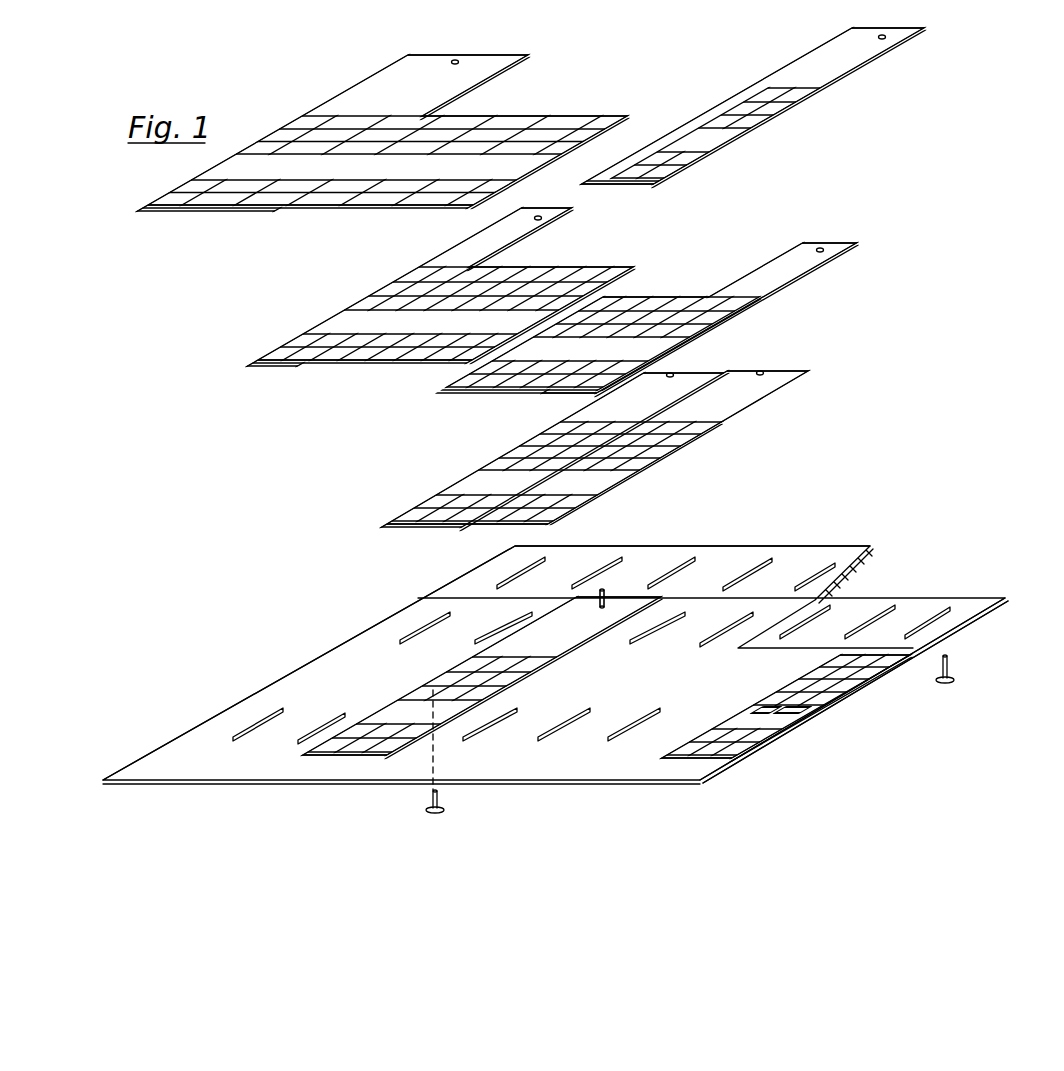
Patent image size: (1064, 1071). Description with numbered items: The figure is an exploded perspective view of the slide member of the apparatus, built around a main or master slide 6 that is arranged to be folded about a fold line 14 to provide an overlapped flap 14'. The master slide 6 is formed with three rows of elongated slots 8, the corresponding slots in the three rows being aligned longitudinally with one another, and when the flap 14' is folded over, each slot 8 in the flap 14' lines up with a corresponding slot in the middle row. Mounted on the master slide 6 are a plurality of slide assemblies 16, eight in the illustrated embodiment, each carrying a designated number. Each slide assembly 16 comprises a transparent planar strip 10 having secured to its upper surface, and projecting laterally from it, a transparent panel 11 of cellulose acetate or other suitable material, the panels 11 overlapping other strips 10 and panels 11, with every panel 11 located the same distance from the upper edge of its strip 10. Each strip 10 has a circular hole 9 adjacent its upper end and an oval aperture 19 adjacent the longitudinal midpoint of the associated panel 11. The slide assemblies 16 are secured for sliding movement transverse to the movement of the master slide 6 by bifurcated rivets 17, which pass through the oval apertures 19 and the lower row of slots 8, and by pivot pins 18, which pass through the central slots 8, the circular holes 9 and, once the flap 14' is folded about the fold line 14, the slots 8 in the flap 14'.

The master slide 6 is at (912, 599).
The elongated slots 8 is at (748, 573).
The circular hole 9 is at (457, 60).
The planar strip 10 is at (485, 69).
The panel 11 is at (592, 119).
The fold line 14 is at (556, 663).
The overlapped flap 14' is at (855, 646).
The slide assemblies 16 is at (353, 75).
The bifurcated rivets 17 is at (782, 708).
The pivot pins 18 is at (606, 596).
The oval aperture 19 is at (272, 160).